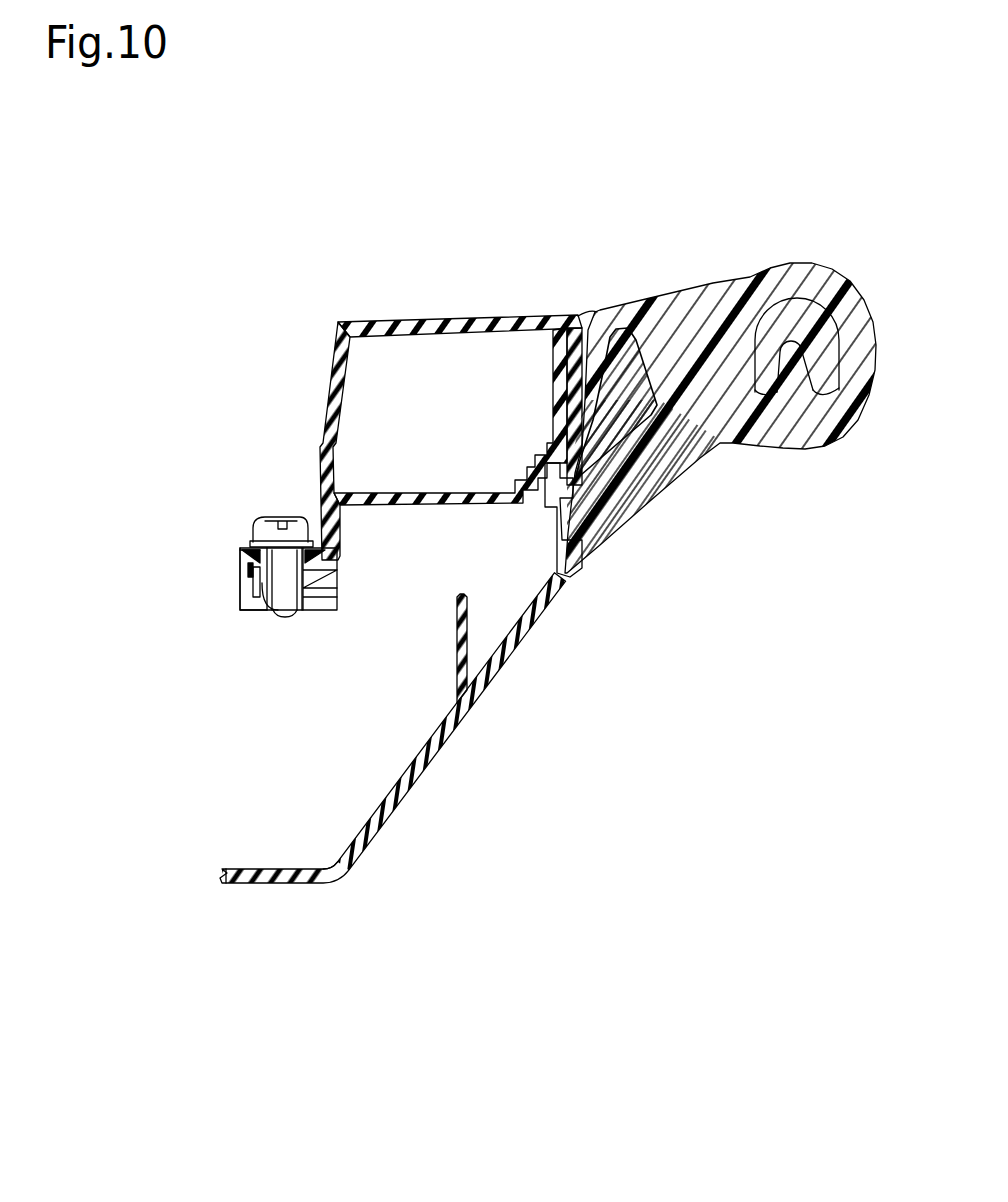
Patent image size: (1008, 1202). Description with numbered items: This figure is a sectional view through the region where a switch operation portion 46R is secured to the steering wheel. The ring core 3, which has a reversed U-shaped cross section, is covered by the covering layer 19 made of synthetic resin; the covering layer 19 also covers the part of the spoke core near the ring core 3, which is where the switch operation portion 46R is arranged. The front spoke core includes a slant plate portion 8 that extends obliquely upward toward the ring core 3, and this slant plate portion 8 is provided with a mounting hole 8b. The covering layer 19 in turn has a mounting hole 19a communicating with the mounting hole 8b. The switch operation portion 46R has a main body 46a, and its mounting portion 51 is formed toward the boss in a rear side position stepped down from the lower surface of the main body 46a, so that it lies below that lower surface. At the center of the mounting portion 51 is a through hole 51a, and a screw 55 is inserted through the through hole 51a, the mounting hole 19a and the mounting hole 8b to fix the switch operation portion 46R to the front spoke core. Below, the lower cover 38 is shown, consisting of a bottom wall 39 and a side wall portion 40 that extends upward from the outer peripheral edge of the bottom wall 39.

The switch operation portion 46R is at (451, 316).
The main body 46a is at (518, 317).
The covering layer 19 is at (682, 307).
The ring core 3 is at (808, 309).
The screw 55 is at (260, 522).
The mounting portion 51 is at (240, 563).
The through hole 51a is at (240, 550).
The slant plate portion 8 is at (337, 580).
The mounting hole 8b is at (276, 616).
The mounting hole 19a is at (290, 618).
The side wall portion 40 is at (463, 723).
The bottom wall 39 is at (267, 883).
The lower cover 38 is at (319, 883).